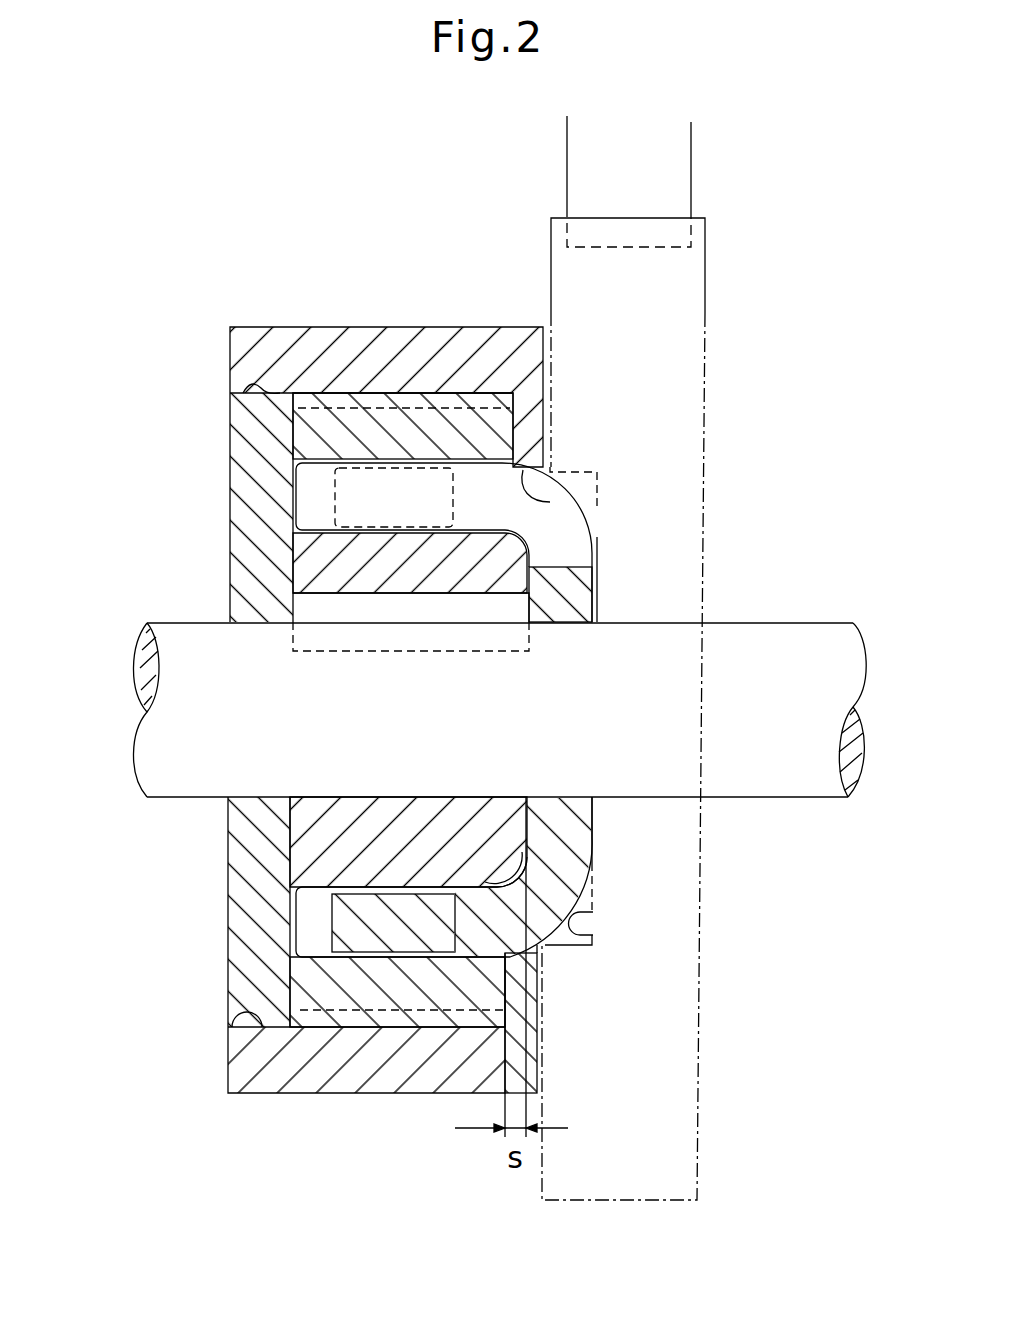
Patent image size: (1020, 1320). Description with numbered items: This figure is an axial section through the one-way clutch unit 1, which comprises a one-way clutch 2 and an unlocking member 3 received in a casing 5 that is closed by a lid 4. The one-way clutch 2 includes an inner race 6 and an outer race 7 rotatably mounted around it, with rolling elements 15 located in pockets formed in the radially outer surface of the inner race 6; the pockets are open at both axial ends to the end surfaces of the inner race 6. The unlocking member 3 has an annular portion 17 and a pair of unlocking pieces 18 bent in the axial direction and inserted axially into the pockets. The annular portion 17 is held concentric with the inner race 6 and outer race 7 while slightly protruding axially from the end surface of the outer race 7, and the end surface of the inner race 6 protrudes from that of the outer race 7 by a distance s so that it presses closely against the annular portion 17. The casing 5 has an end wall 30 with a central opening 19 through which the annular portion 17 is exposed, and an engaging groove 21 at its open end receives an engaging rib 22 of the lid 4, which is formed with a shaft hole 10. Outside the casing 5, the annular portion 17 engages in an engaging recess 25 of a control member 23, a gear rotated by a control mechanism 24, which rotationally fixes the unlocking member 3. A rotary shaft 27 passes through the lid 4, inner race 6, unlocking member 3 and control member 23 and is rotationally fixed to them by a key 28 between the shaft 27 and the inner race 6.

The one-way clutch unit 1 is at (266, 324).
The one-way clutch 2 is at (465, 392).
The unlocking member 3 is at (592, 524).
The lid 4 is at (258, 888).
The casing 5 is at (317, 342).
The inner race 6 is at (320, 558).
The outer race 7 is at (310, 435).
The shaft hole 10 is at (263, 797).
The rolling elements 15 is at (317, 500).
The annular portion 17 is at (563, 583).
The unlocking pieces 18 is at (383, 483).
The central opening 19 is at (550, 502).
The engaging groove 21 is at (258, 390).
The engaging rib 22 is at (232, 1021).
The control member 23 is at (635, 327).
The control mechanism 24 is at (655, 160).
The engaging recess 25 is at (593, 937).
The rotary shaft 27 is at (190, 715).
The key 28 is at (318, 606).
The end wall 30 is at (525, 988).